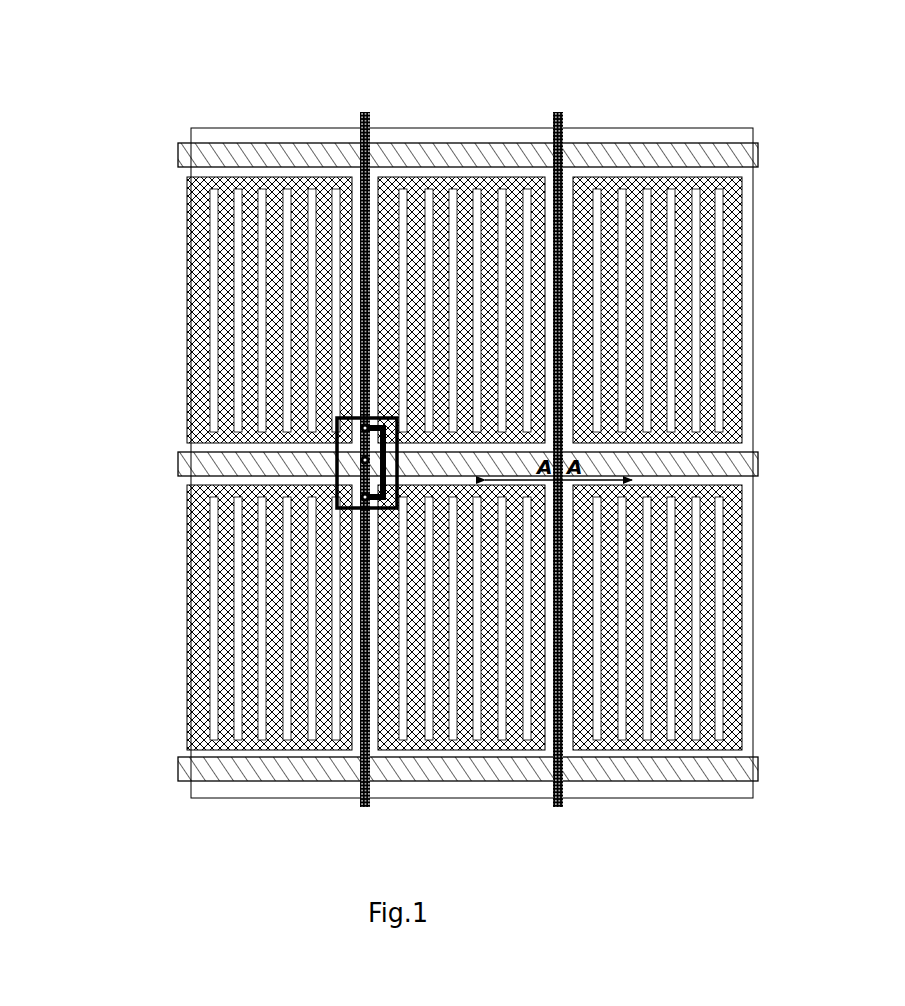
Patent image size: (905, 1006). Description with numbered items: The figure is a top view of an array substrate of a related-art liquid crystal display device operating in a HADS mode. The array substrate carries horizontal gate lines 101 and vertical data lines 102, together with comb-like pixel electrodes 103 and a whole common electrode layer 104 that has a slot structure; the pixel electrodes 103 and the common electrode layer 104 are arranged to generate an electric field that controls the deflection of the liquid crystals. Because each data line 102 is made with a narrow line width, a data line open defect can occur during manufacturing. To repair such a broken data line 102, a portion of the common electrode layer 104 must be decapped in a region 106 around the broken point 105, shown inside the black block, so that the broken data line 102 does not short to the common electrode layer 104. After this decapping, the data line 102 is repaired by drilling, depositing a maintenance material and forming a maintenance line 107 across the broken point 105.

The gate lines 101 is at (178, 155).
The data lines 102 is at (558, 112).
The pixel electrodes 103 is at (187, 233).
The common electrode layer 104 is at (252, 137).
The broken point 105 is at (178, 464).
The region 106 is at (345, 432).
The maintenance line 107 is at (360, 477).